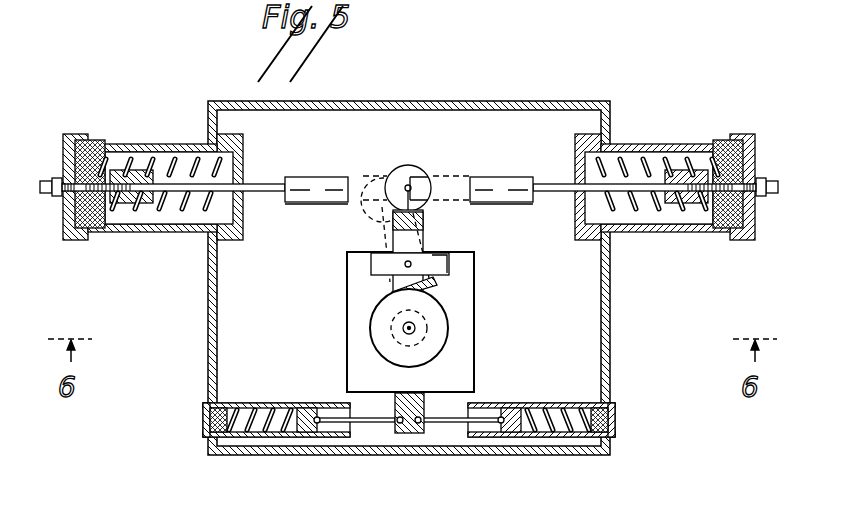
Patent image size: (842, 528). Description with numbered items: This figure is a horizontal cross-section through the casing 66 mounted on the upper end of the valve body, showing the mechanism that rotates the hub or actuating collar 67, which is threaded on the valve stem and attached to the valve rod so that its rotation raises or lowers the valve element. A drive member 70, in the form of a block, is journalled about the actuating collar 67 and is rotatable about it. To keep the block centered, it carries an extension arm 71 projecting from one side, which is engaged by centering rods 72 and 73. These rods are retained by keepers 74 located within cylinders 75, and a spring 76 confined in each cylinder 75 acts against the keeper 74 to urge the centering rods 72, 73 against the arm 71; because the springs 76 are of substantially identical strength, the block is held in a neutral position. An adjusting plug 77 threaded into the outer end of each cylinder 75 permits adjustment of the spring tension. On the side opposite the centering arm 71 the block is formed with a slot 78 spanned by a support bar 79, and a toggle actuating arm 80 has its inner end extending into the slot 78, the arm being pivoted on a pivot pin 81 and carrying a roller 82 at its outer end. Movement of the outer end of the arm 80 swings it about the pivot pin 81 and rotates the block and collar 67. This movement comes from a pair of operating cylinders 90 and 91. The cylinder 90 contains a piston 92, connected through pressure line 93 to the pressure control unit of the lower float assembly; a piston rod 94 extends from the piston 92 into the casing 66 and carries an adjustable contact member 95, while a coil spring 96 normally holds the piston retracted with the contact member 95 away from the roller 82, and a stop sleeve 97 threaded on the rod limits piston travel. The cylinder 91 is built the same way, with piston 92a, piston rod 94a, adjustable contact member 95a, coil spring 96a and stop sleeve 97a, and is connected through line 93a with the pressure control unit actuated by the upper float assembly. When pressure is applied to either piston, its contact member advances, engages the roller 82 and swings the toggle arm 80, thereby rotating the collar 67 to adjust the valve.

The casing 66 is at (365, 101).
The operating cylinder 90 is at (145, 144).
The operating cylinder 91 is at (658, 146).
The piston 92 is at (108, 222).
The piston 92a is at (702, 230).
The pressure line 93 is at (45, 182).
The line 93a is at (776, 180).
The piston rod 94 is at (257, 184).
The piston rod 94a is at (630, 222).
The adjustable contact member 95 is at (315, 178).
The adjustable contact member 95a is at (497, 178).
The coil spring 96 is at (178, 215).
The coil spring 96a is at (632, 165).
The stop sleeve 97 is at (118, 168).
The stop sleeve 97a is at (694, 168).
The roller 82 is at (403, 168).
The toggle actuating arm 80 is at (398, 236).
The pivot pin 81 is at (406, 264).
The support bar 79 is at (433, 256).
The slot 78 is at (432, 290).
The actuating collar 67 is at (437, 324).
The drive member 70 is at (462, 340).
The extension arm 71 is at (425, 400).
The centering rod 72 is at (370, 425).
The centering rod 73 is at (452, 425).
The keeper 74 is at (302, 404).
The cylinder 75 is at (237, 403).
The spring 76 is at (257, 437).
The adjusting plug 77 is at (204, 421).